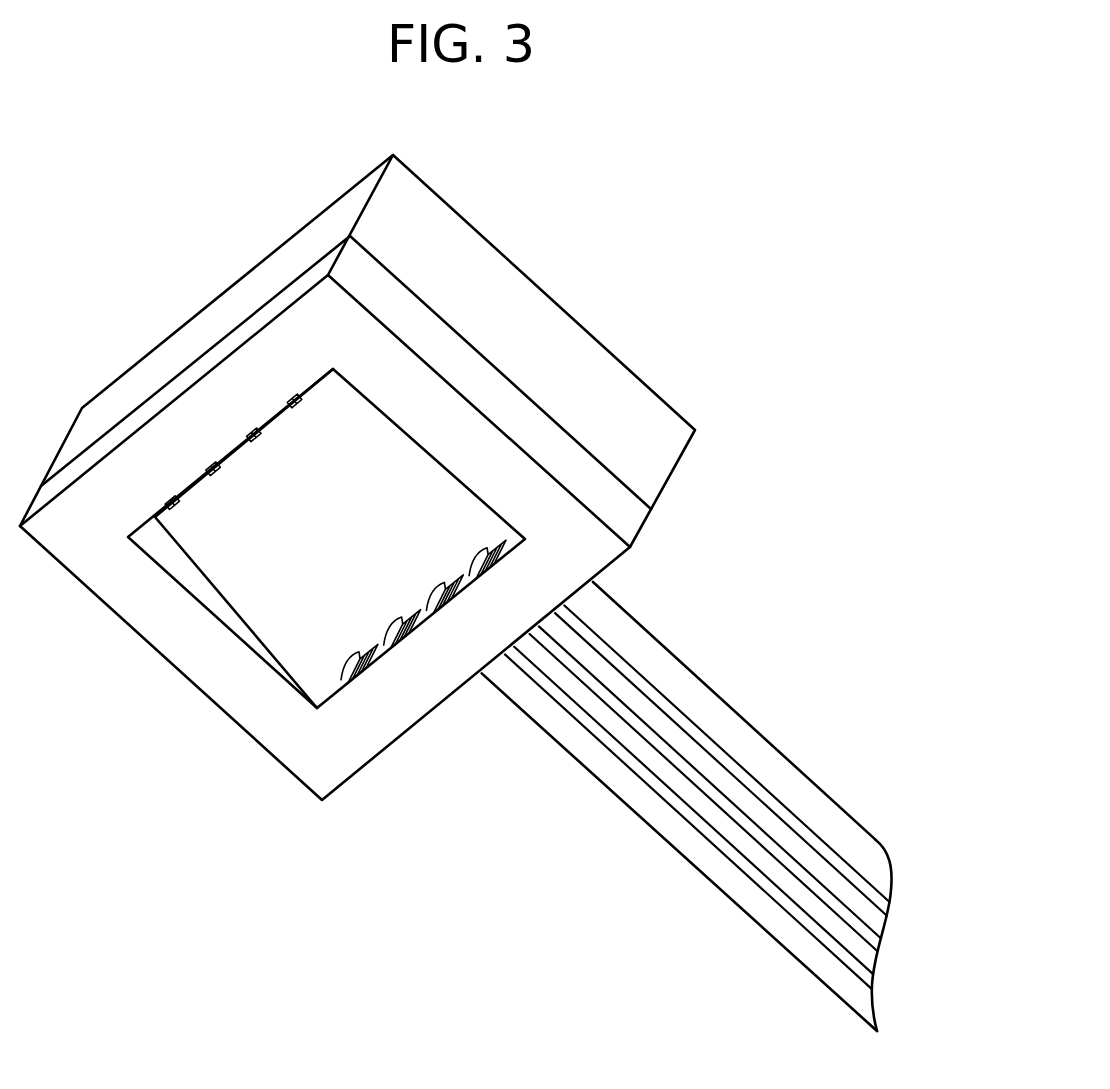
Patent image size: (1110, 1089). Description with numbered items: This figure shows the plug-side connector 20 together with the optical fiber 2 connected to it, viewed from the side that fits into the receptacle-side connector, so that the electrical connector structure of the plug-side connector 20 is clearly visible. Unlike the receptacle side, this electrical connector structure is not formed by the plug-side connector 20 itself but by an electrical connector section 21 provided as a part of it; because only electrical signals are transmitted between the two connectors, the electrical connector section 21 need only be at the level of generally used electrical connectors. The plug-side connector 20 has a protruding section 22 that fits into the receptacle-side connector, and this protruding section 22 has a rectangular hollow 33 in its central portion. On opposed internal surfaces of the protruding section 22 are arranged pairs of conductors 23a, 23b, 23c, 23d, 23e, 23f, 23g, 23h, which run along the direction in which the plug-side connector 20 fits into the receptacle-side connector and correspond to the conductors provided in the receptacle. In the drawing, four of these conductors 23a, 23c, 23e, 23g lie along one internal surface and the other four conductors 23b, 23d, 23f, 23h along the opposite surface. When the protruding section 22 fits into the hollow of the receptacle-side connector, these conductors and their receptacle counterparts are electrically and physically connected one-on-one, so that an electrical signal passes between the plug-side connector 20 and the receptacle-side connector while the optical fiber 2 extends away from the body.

The optical fiber 2 is at (752, 728).
The plug-side connector 20 is at (418, 218).
The electrical connector section 21 is at (102, 607).
The protruding section 22 is at (507, 408).
The rectangular hollow 33 is at (277, 590).
The conductor 23a is at (170, 499).
The conductor 23b is at (348, 654).
The conductor 23c is at (212, 468).
The conductor 23d is at (392, 627).
The conductor 23e is at (253, 434).
The conductor 23f is at (432, 600).
The conductor 23g is at (293, 400).
The conductor 23h is at (474, 570).